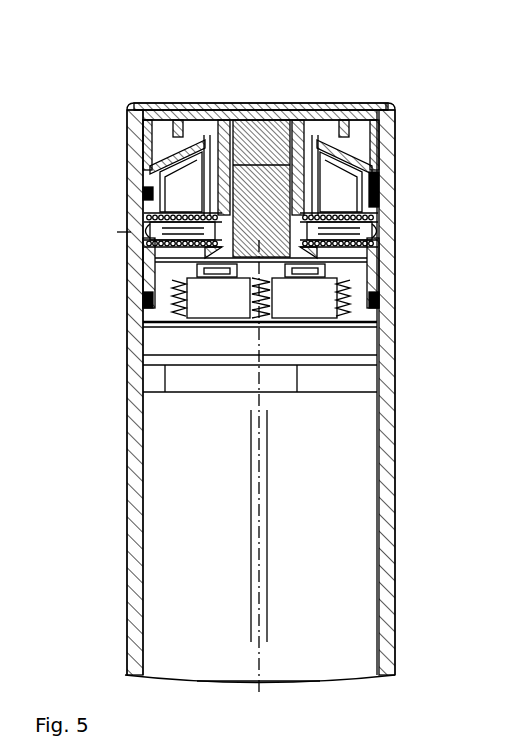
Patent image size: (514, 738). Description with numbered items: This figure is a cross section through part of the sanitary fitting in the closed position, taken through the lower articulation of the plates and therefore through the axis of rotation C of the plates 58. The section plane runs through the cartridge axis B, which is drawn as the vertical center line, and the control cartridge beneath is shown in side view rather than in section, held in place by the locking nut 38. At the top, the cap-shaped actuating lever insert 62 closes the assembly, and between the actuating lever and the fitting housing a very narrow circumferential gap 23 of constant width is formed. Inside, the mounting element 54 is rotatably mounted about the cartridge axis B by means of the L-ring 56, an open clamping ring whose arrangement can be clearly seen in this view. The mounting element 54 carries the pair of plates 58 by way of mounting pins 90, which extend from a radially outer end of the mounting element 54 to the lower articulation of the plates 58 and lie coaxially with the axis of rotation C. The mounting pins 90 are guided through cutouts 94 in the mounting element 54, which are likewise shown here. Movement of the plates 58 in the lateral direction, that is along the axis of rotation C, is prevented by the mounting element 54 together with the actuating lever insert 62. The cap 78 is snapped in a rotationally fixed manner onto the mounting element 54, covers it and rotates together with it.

The gap 23 is at (397, 170).
The locking nut 38 is at (300, 303).
The mounting element 54 is at (155, 215).
The L-ring 56 is at (373, 300).
The plate 58 is at (372, 262).
The actuating lever insert 62 is at (189, 103).
The cap 78 is at (384, 181).
The mounting pin 90 is at (273, 101).
The cutouts 94 is at (186, 250).
The cartridge axis B is at (263, 568).
The axis of rotation C is at (122, 232).